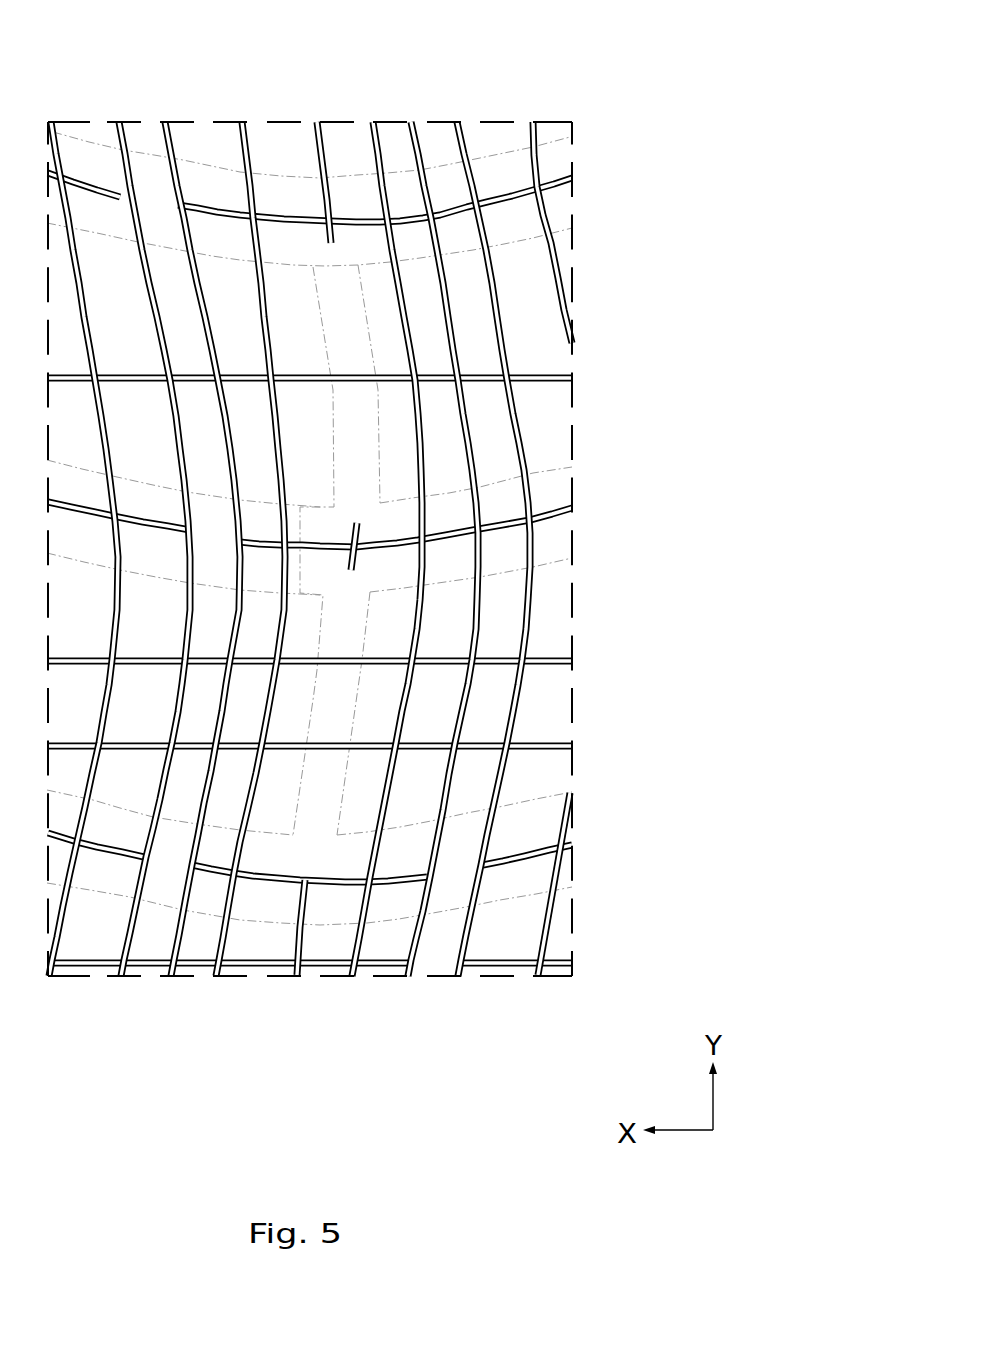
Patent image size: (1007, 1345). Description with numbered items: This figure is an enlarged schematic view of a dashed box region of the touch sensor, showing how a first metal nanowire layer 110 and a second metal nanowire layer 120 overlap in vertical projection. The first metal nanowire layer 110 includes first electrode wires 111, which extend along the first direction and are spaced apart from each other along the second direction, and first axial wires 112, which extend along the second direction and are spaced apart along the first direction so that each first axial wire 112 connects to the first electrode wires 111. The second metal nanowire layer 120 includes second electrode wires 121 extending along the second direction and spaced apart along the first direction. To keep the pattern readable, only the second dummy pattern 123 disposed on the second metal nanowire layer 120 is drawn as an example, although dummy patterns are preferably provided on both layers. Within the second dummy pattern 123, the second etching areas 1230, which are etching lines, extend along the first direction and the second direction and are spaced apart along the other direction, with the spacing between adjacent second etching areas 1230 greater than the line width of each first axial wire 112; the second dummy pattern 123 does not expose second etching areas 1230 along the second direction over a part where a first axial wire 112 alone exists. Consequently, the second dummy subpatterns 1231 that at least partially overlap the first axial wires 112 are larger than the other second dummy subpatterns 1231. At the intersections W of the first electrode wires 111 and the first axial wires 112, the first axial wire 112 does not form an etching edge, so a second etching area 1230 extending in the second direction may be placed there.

The first metal nanowire layer 110 is at (632, 3).
The first electrode wires 111 is at (477, 157).
The first axial wires 112 is at (320, 299).
The second metal nanowire layer 120 is at (547, 422).
The second electrode wires 121 is at (498, 323).
The second dummy pattern 123 is at (443, 1043).
The second etching areas 1230 is at (217, 986).
The second dummy subpatterns 1231 is at (387, 950).
The intersections W is at (350, 252).